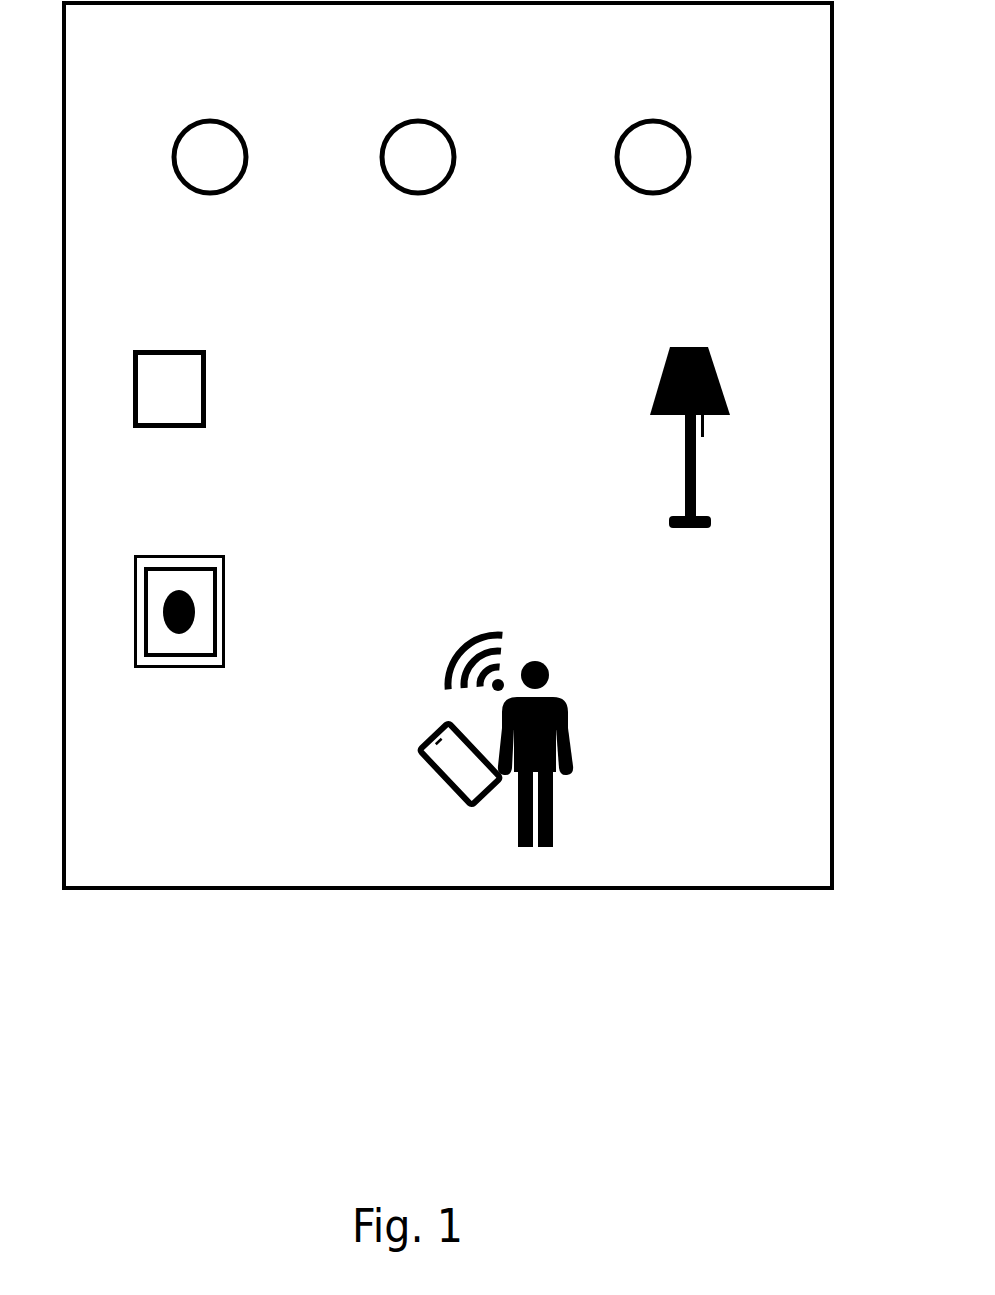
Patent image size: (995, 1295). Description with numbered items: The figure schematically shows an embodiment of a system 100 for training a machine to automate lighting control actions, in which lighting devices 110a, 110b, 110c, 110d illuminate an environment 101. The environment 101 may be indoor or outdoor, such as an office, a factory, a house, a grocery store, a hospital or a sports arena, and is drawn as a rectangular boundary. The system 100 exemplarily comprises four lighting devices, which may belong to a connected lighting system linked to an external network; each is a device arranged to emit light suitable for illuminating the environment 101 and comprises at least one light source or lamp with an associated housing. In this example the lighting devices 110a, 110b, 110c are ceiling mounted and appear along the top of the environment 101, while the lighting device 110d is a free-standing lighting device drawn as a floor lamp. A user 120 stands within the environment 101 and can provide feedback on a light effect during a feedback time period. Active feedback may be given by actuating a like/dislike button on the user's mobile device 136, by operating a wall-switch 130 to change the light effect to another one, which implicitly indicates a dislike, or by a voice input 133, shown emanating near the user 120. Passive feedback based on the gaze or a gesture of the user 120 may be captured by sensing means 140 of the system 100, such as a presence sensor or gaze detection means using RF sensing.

The system 100 is at (449, 1071).
The environment 101 is at (297, 893).
The lighting device 110a is at (223, 118).
The lighting device 110b is at (428, 118).
The lighting device 110c is at (665, 118).
The lighting device 110d is at (717, 336).
The user 120 is at (555, 687).
The wall-switch 130 is at (202, 545).
The voice input 133 is at (468, 650).
The mobile device 136 is at (430, 733).
The sensing means 140 is at (193, 349).